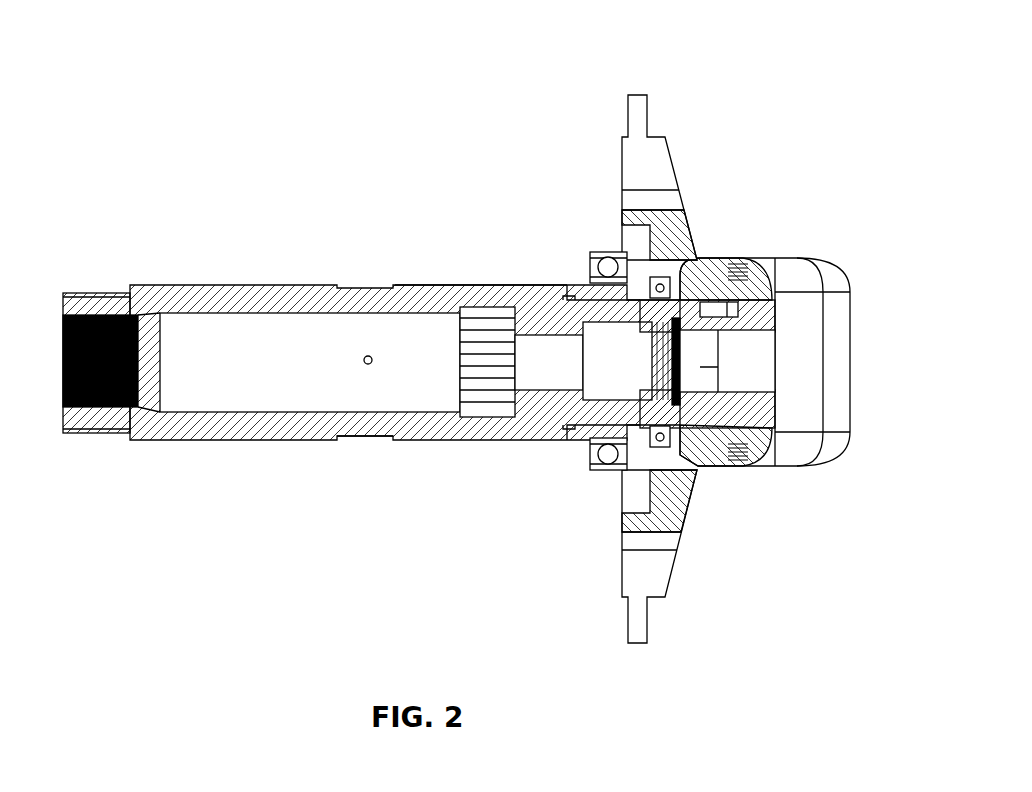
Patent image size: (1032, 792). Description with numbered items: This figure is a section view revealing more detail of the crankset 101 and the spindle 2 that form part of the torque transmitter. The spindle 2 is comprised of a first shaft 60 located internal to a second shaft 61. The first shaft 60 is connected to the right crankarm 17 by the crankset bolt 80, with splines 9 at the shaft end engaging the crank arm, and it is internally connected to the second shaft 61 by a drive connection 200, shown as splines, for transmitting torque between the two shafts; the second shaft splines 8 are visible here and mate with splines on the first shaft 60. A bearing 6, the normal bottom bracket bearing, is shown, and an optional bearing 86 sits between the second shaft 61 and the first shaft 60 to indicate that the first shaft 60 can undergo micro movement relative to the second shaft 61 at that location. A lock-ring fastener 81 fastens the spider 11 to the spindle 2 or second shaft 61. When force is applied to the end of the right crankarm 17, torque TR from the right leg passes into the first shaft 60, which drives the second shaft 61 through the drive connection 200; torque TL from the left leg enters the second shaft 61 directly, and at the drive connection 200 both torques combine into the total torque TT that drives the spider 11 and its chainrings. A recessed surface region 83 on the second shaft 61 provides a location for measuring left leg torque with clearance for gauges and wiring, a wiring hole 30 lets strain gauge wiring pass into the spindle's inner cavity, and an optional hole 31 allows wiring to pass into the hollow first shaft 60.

The crankset 101 is at (390, 108).
The spindle 2 is at (277, 275).
The splines 9 is at (83, 288).
The second shaft 61 is at (435, 300).
The drive connection 200 is at (537, 288).
The recessed surface region 83 is at (367, 437).
The wiring hole 30 is at (355, 350).
The second shaft splines 8 is at (485, 368).
The first shaft 60 is at (533, 403).
The hole 31 is at (628, 316).
The right crankarm 17 is at (722, 282).
The crankset bolt 80 is at (743, 386).
The spider 11 is at (642, 172).
The lock-ring fastener 81 is at (652, 245).
The bearing 86 is at (693, 478).
The bearing 6 is at (595, 472).
The left leg torque TL is at (330, 361).
The right leg torque TR is at (530, 362).
The total torque TT is at (645, 237).